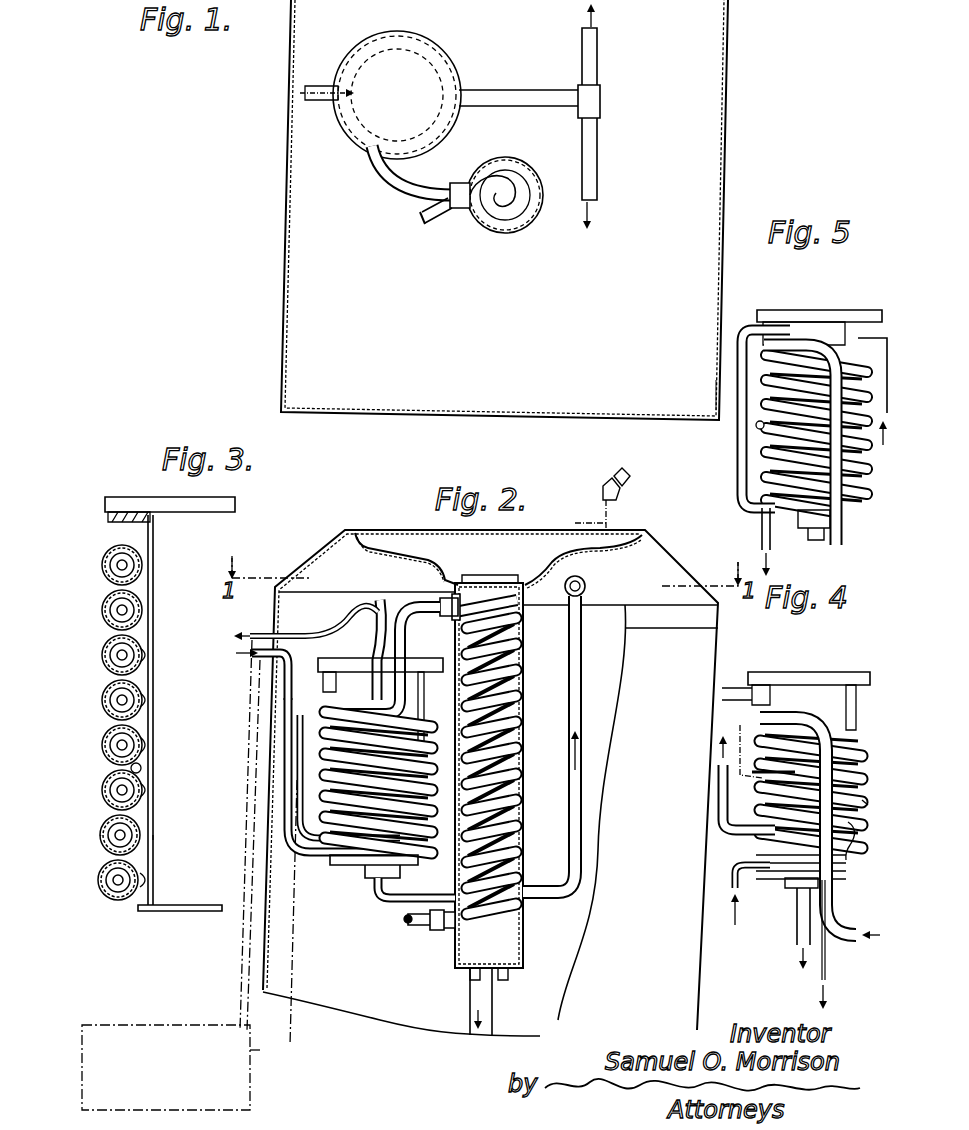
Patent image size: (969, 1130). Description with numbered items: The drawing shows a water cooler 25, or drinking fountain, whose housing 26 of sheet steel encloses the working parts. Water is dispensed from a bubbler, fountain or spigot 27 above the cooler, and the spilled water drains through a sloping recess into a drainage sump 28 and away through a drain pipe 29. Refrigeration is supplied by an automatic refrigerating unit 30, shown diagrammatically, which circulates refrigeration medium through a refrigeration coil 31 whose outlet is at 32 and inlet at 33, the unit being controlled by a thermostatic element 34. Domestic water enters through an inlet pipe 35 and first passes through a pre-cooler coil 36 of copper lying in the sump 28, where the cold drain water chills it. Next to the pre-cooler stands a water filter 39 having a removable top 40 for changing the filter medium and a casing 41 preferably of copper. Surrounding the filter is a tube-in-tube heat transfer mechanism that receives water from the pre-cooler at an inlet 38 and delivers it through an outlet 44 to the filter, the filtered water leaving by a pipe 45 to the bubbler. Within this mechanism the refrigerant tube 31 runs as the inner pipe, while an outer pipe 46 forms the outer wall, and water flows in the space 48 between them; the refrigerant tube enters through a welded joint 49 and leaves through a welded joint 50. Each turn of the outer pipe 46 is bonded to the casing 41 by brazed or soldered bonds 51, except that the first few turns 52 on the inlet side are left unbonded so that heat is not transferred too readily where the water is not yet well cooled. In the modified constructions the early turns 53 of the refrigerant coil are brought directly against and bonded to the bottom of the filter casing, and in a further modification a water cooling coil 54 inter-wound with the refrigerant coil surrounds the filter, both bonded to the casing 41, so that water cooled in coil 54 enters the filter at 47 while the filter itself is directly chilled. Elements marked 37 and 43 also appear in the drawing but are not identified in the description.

In FIG. 1, the water cooler 25 is at (725, 104).
In FIG. 2, the water cooler 25 is at (672, 560).
In FIG. 1, the housing 26 is at (718, 277).
In FIG. 2, the bubbler, fountain or spigot 27 is at (622, 494).
In FIG. 1, the drainage sump 28 is at (494, 232).
In FIG. 2, the drainage sump 28 is at (522, 928).
In FIG. 2, the drain pipe 29 is at (493, 996).
In FIG. 2, the automatic refrigerating unit 30 is at (172, 1077).
In FIG. 5, the refrigeration coil 31 is at (778, 470).
In FIG. 3, the refrigeration coil 31 is at (150, 692).
In FIG. 2, the refrigeration coil 31 is at (314, 616).
In FIG. 4, the refrigeration coil 31 is at (745, 866).
In FIG. 2, the outlet to refrigeration coil 32 is at (248, 623).
In FIG. 4, the outlet to refrigeration coil 32 is at (742, 832).
In FIG. 2, the inlet 33 is at (260, 665).
In FIG. 4, the inlet 33 is at (826, 977).
In FIG. 5, the thermostatic element 34 is at (758, 425).
In FIG. 3, the thermostatic element 34 is at (142, 768).
In FIG. 2, the thermostatic element 34 is at (350, 790).
In FIG. 4, the thermostatic element 34 is at (760, 745).
In FIG. 1, the inlet pipe 35 is at (422, 216).
In FIG. 2, the inlet pipe 35 is at (408, 924).
In FIG. 1, the pre-cooler coil 36 is at (520, 212).
In FIG. 2, the pre-cooler coil 36 is at (512, 778).
In FIG. 2, the fitting 37 is at (490, 622).
In FIG. 2, the inlet of heat transfer mechanism 38 is at (420, 608).
In FIG. 3, the water filter 39 is at (170, 910).
In FIG. 2, the water filter 39 is at (352, 860).
In FIG. 4, the water filter 39 is at (825, 690).
In FIG. 1, the top 40 is at (407, 48).
In FIG. 3, the top 40 is at (194, 510).
In FIG. 2, the top 40 is at (416, 670).
In FIG. 5, the casing 41 is at (845, 335).
In FIG. 3, the casing 41 is at (154, 632).
In FIG. 2, the casing 41 is at (408, 686).
In FIG. 2, the connecting pipe 43 is at (372, 892).
In FIG. 1, the outlet 44 is at (520, 95).
In FIG. 2, the outlet 44 is at (328, 684).
In FIG. 1, the pipe 45 is at (600, 52).
In FIG. 2, the pipe 45 is at (588, 584).
In FIG. 4, the pipe 45 is at (797, 930).
In FIG. 3, the outer pipe 46 is at (105, 835).
In FIG. 4, the outer pipe 46 is at (874, 790).
In FIG. 5, the filter inlet point 47 is at (745, 322).
In FIG. 3, the space 48 is at (150, 783).
In FIG. 2, the welded joint 49 is at (300, 688).
In FIG. 4, the welded joint 49 is at (828, 938).
In FIG. 2, the welded joint 50 is at (384, 604).
In FIG. 4, the welded joint 50 is at (862, 730).
In FIG. 3, the bonds 51 is at (150, 660).
In FIG. 3, the unbonded turns 52 is at (140, 600).
In FIG. 4, the unbonded turns 52 is at (762, 718).
In FIG. 4, the early turns of refrigerant coil 53 is at (775, 886).
In FIG. 5, the water cooling coil 54 is at (868, 488).